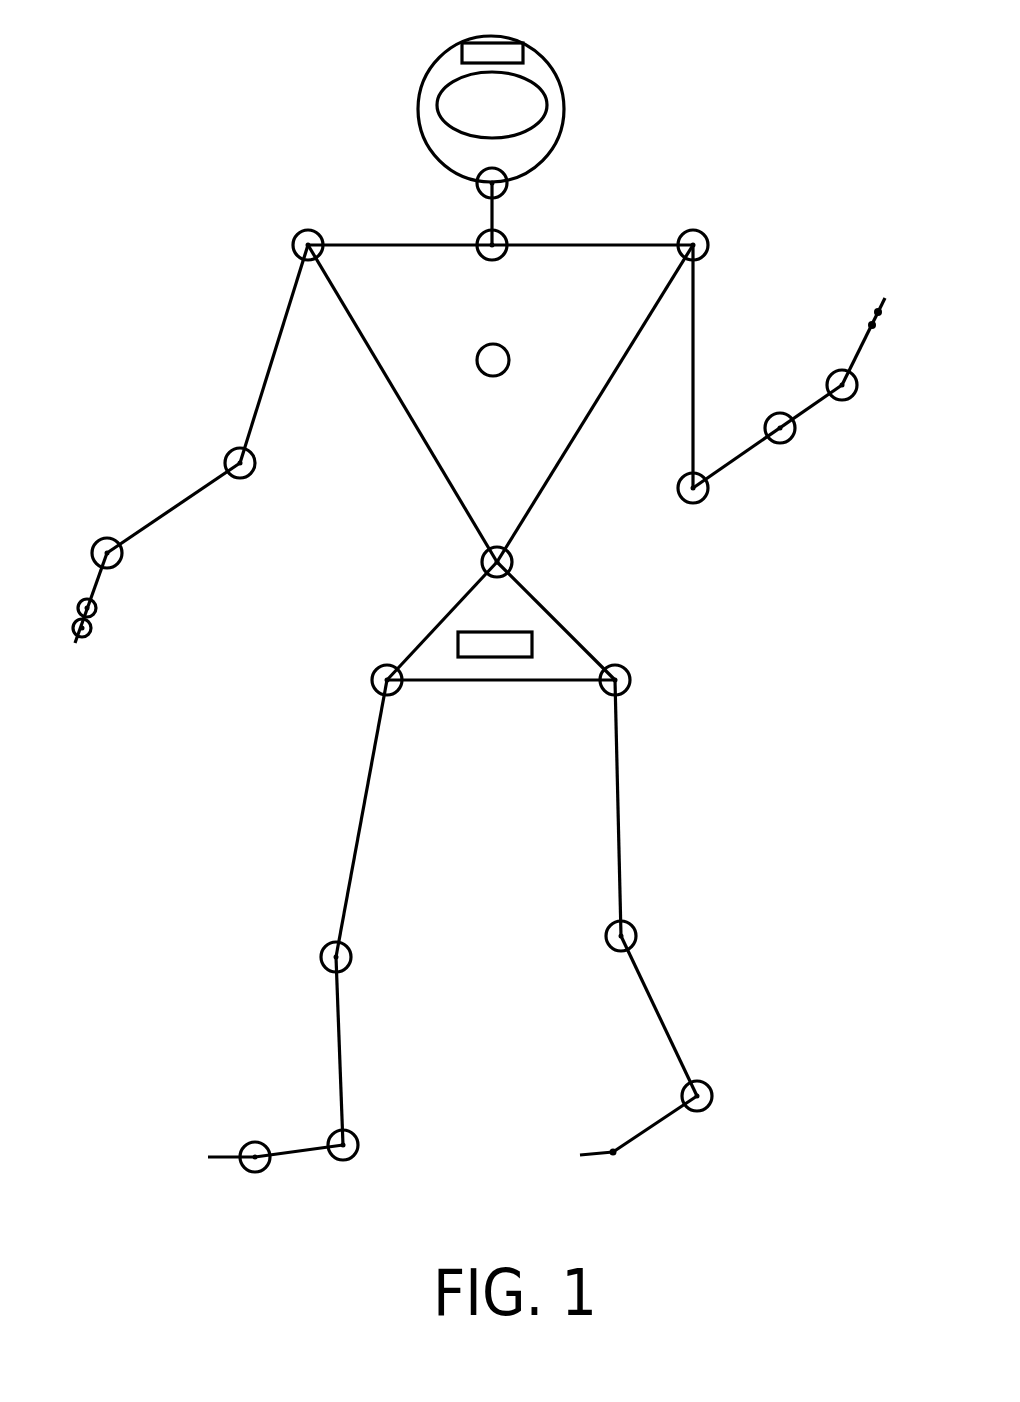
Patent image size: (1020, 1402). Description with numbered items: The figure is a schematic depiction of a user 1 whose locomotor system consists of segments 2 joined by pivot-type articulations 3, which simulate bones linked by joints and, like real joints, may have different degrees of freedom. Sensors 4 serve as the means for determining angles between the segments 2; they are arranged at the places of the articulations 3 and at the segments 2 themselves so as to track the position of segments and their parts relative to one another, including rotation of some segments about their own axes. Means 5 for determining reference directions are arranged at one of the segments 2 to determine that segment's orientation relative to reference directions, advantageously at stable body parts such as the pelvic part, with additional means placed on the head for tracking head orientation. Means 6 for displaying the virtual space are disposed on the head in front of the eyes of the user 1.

The user 1 is at (758, 157).
The segments 2 is at (425, 401).
The pivot-type articulations 3 is at (842, 401).
The sensors 4 is at (510, 348).
The means for determining reference directions 5 is at (515, 54).
The means for displaying the virtual space 6 is at (524, 108).